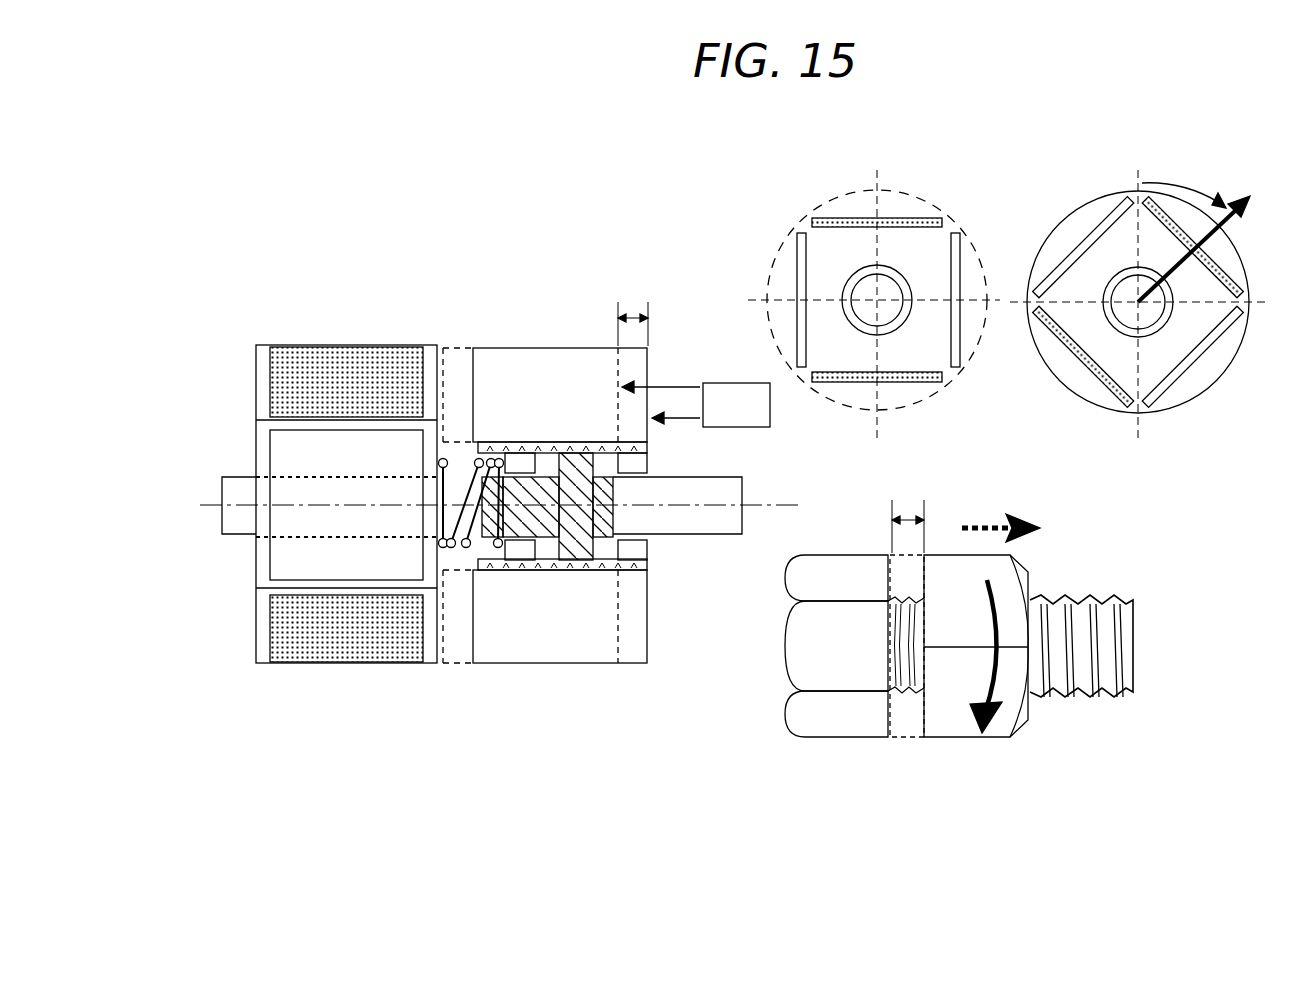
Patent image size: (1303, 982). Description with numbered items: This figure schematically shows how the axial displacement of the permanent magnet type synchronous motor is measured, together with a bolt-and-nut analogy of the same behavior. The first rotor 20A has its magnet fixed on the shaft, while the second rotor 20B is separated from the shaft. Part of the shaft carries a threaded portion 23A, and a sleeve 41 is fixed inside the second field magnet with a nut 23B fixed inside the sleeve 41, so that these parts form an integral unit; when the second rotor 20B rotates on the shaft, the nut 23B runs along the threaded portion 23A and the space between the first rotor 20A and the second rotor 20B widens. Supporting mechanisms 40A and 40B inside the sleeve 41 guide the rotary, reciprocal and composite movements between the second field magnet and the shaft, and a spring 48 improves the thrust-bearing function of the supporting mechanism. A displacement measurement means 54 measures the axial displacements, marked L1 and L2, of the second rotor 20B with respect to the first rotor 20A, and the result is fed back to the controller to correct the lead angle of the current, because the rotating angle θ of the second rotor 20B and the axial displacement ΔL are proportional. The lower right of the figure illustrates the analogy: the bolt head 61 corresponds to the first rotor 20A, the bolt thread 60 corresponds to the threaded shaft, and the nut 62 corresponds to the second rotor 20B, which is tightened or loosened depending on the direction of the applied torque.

The first rotor 20A is at (437, 345).
The second rotor 20B is at (483, 348).
The sleeve 41 is at (525, 442).
The threaded portion 23A is at (545, 540).
The nut 23B is at (576, 453).
The supporting mechanism 40A is at (514, 548).
The supporting mechanism 40B is at (637, 548).
The spring 48 is at (446, 552).
The drive unit 54 is at (718, 383).
The bolt thread 60 is at (1118, 655).
The bolt head 61 is at (810, 740).
The nut 62 is at (912, 740).